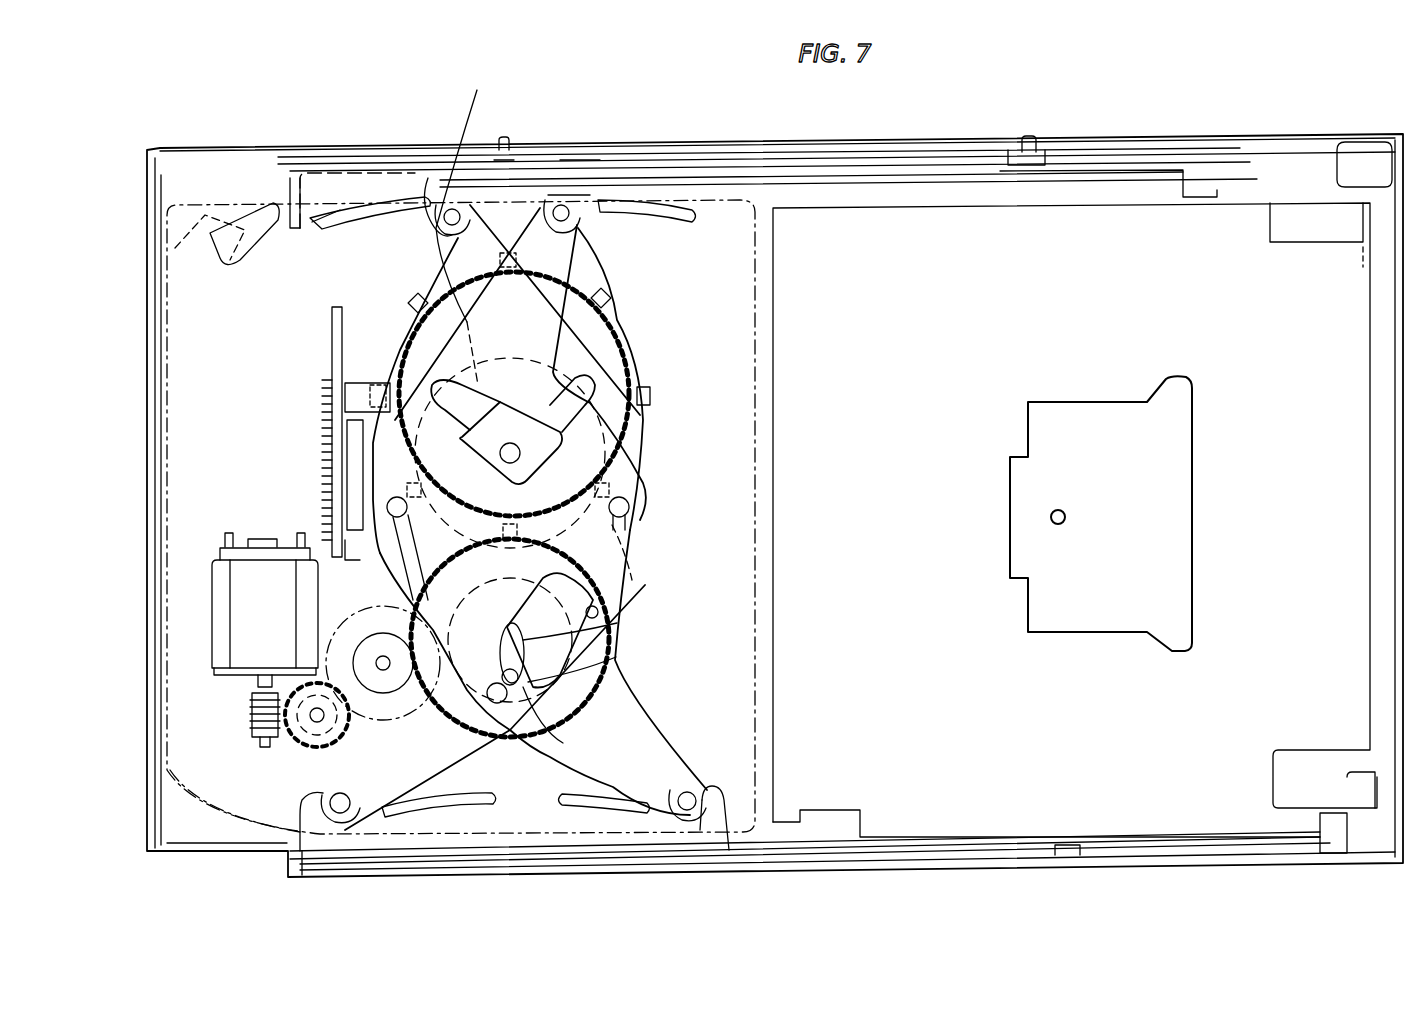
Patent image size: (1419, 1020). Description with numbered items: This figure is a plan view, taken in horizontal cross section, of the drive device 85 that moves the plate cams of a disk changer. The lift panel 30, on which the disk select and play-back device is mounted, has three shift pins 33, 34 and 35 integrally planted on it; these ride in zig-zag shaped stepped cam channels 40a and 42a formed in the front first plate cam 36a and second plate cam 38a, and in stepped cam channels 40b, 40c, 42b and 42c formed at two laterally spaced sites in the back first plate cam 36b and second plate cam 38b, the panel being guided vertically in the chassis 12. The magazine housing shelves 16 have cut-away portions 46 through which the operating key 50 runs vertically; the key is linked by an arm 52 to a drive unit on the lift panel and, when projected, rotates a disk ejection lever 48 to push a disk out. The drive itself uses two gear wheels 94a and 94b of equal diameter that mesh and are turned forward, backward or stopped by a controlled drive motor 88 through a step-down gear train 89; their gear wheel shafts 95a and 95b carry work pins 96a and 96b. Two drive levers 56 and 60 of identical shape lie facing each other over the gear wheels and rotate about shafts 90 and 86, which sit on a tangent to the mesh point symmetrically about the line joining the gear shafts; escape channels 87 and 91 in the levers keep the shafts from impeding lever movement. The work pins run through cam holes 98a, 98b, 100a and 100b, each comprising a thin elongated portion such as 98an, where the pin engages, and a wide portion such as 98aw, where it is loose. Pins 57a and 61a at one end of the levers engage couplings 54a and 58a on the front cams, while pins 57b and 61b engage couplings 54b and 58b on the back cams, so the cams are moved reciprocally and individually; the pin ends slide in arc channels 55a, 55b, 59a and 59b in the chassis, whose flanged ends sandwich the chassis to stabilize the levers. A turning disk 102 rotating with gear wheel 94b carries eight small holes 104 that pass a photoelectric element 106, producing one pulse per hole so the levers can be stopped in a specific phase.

The chassis 12 is at (220, 328).
The magazine housing shelves 16 is at (222, 805).
The lift panel 30 is at (1075, 528).
The shift pin 33 is at (1066, 854).
The shift pin 34 is at (1031, 138).
The shift pin 35 is at (507, 136).
The first plate cam 36a is at (441, 858).
The first plate cam 36b is at (886, 160).
The second plate cam 38a is at (479, 856).
The second plate cam 38b is at (920, 170).
The stepped cam channel 40a is at (980, 865).
The stepped cam channel 40b is at (1010, 152).
The stepped cam channel 40c is at (502, 137).
The stepped cam channel 42a is at (908, 858).
The stepped cam channel 42b is at (1080, 140).
The stepped cam channel 42c is at (573, 147).
The cut-away portion 46 is at (240, 240).
The disk ejection lever 48 is at (257, 203).
The operating key 50 is at (291, 195).
The arm 52 is at (467, 224).
The coupling 54a is at (729, 850).
The coupling 54b is at (576, 206).
The arc channel 55a is at (600, 815).
The arc channel 55b is at (684, 207).
The drive lever 56 is at (573, 772).
The pin 57a is at (686, 812).
The pin 57b is at (576, 230).
The coupling 58a is at (320, 807).
The coupling 58b is at (435, 200).
The arc channel 59a is at (493, 803).
The arc channel 59b is at (370, 207).
The drive lever 60 is at (450, 779).
The pin 61a is at (345, 822).
The pin 61b is at (438, 240).
The drive device 85 is at (247, 472).
The shaft 86 is at (386, 503).
The escape channel 87 is at (400, 537).
The drive motor 88 is at (240, 594).
The step-down gear train 89 is at (297, 742).
The shaft 90 is at (628, 500).
The escape channel 91 is at (642, 530).
The gear wheel 94a is at (613, 627).
The gear wheel 94b is at (655, 418).
The gear wheel shaft 95a is at (510, 620).
The gear wheel shaft 95b is at (625, 322).
The work pin 96a is at (530, 697).
The work pin 96b is at (507, 452).
The cam hole 98a is at (552, 630).
The thin elongated hole portion 98an is at (563, 743).
The wide elongated hole portion 98aw is at (616, 657).
The cam hole 98b is at (562, 438).
The cam hole 100a is at (617, 625).
The cam hole 100b is at (600, 387).
The turning disk 102 is at (438, 287).
The small hole 104 is at (410, 306).
The photoelectric element 106 is at (357, 387).